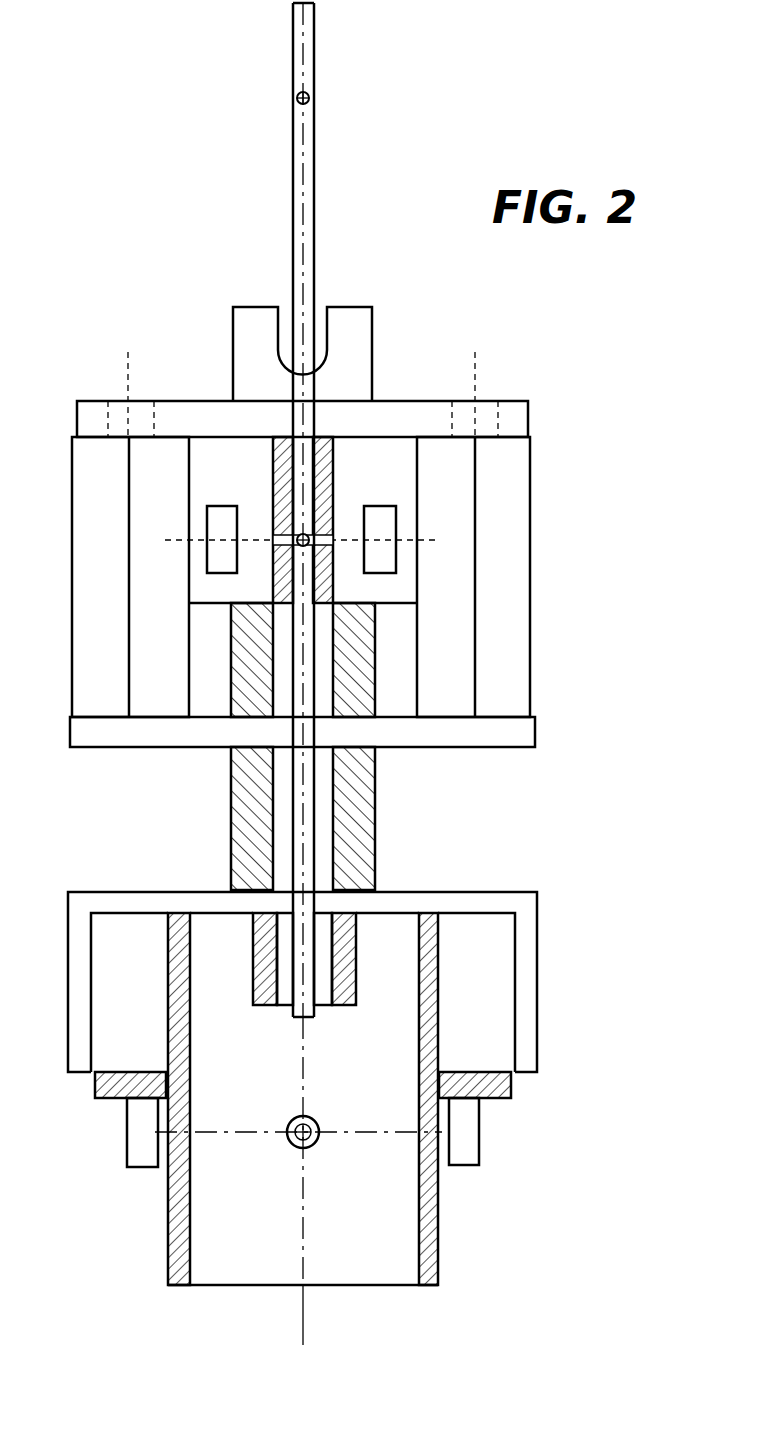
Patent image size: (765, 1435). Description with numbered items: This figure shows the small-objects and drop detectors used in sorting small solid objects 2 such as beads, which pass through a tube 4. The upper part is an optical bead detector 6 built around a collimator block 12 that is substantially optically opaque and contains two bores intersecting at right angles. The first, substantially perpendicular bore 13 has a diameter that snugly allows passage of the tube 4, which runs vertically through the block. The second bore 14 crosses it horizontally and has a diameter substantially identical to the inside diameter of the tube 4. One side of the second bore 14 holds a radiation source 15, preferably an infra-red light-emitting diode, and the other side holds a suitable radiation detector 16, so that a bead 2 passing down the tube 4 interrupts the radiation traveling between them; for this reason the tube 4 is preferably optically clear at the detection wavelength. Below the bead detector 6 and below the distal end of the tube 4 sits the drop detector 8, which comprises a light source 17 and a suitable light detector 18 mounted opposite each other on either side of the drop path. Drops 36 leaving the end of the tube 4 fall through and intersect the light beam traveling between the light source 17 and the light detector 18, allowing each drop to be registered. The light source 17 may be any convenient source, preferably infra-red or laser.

The small solid objects 2 is at (309, 97).
The tube 4 is at (293, 181).
The optical bead detector 6 is at (510, 524).
The drop detector 8 is at (523, 982).
The collimator block 12 is at (331, 437).
The first bore 13 is at (290, 453).
The second bore 14 is at (334, 538).
The radiation source 15 is at (222, 553).
The radiation detector 16 is at (390, 558).
The light source 17 is at (133, 1157).
The light detector 18 is at (468, 1157).
The drops 36 is at (296, 1146).